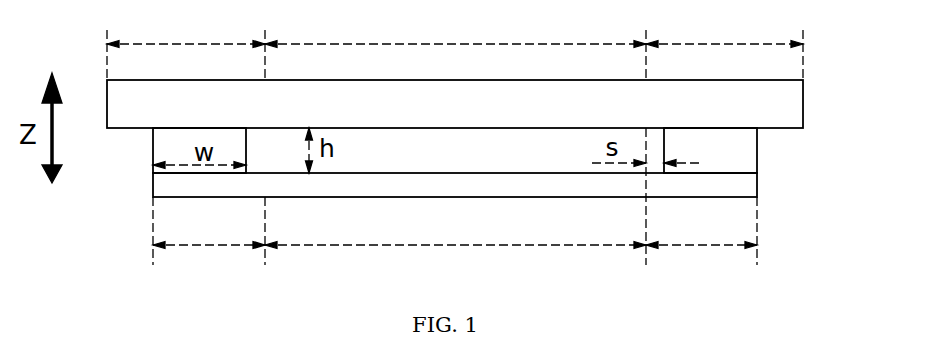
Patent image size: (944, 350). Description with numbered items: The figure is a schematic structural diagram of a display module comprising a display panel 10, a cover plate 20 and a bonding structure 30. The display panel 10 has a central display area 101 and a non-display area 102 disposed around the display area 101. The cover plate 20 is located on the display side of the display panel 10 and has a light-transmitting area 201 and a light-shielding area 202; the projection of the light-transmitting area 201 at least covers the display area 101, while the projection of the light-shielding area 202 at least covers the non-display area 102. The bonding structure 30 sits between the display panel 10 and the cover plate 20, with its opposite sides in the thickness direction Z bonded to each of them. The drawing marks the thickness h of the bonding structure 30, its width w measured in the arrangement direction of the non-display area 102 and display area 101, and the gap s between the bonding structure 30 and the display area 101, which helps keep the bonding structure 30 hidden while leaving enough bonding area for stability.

The display panel 10 is at (758, 183).
The cover plate 20 is at (804, 101).
The bonding structure 30 is at (153, 150).
The display area 101 is at (455, 196).
The non-display area 102 is at (455, 231).
The light-transmitting area 201 is at (455, 45).
The light-shielding area 202 is at (455, 45).